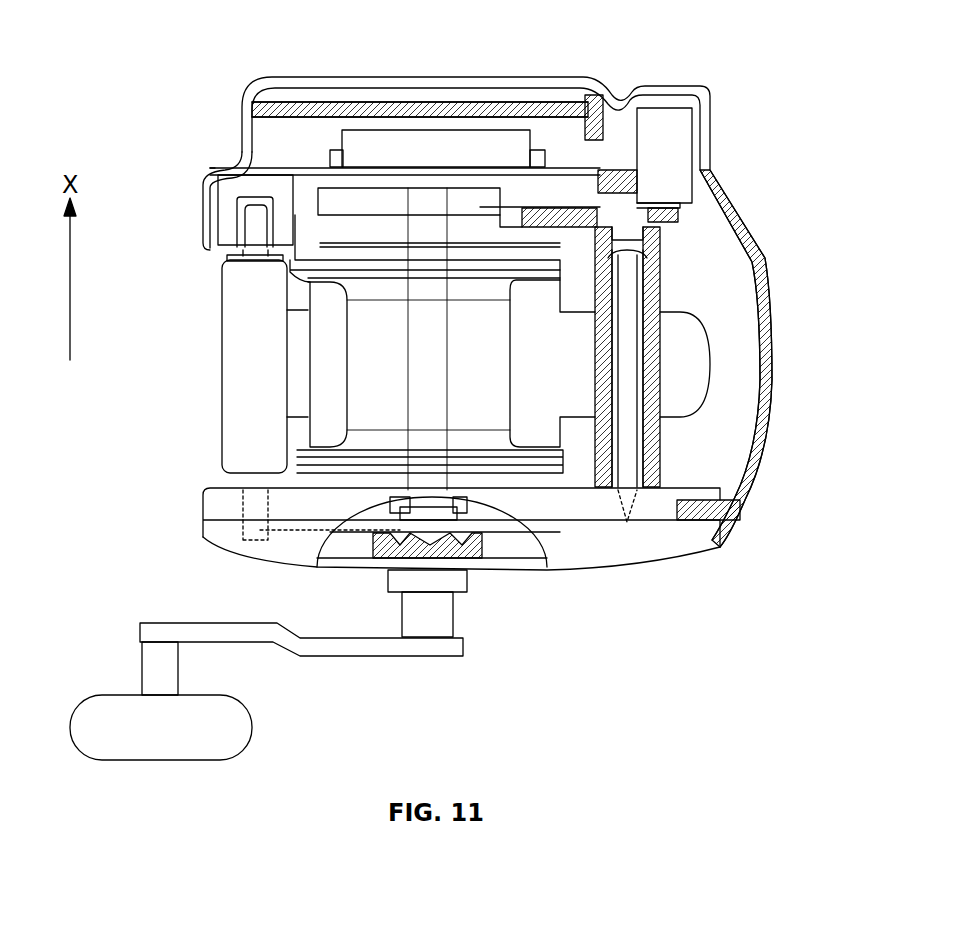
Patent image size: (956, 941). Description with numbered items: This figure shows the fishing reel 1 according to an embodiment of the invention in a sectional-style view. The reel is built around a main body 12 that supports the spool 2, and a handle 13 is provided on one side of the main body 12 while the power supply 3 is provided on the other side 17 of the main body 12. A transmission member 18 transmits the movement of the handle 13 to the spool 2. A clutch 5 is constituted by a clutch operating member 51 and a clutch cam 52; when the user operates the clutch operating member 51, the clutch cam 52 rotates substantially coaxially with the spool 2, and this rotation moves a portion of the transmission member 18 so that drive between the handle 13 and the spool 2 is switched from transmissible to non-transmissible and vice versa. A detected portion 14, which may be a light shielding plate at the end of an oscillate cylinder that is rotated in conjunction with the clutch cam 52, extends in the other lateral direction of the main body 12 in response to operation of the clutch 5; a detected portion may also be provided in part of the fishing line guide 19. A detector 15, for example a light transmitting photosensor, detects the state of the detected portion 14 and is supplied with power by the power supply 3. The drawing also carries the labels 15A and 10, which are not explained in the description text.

The fishing reel 1 is at (683, 73).
The other side 17 is at (302, 125).
The power supply 3 is at (403, 145).
The main body 12 is at (240, 135).
The bolt 15A is at (205, 210).
The detector 15 is at (680, 218).
The detected portion 14 is at (660, 233).
The spool 2 is at (367, 350).
The fishing line guide 19 is at (700, 352).
The clutch operating member 51 is at (217, 365).
The reel body 10 is at (208, 456).
The clutch 5 is at (62, 415).
The clutch cam 52 is at (295, 580).
The transmission member 18 is at (468, 545).
The handle 13 is at (232, 725).